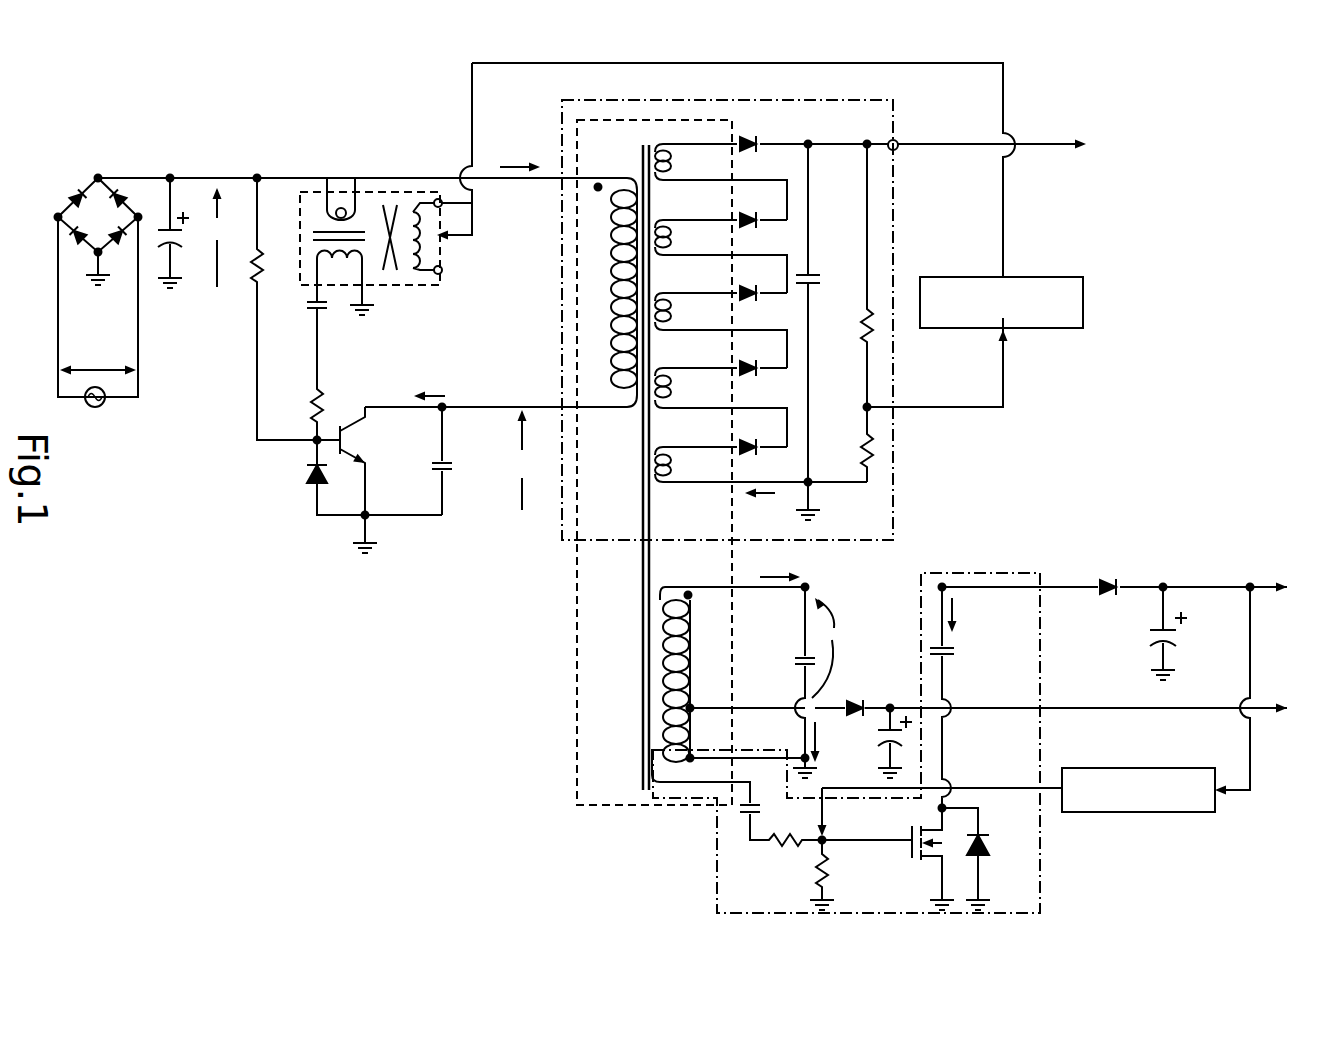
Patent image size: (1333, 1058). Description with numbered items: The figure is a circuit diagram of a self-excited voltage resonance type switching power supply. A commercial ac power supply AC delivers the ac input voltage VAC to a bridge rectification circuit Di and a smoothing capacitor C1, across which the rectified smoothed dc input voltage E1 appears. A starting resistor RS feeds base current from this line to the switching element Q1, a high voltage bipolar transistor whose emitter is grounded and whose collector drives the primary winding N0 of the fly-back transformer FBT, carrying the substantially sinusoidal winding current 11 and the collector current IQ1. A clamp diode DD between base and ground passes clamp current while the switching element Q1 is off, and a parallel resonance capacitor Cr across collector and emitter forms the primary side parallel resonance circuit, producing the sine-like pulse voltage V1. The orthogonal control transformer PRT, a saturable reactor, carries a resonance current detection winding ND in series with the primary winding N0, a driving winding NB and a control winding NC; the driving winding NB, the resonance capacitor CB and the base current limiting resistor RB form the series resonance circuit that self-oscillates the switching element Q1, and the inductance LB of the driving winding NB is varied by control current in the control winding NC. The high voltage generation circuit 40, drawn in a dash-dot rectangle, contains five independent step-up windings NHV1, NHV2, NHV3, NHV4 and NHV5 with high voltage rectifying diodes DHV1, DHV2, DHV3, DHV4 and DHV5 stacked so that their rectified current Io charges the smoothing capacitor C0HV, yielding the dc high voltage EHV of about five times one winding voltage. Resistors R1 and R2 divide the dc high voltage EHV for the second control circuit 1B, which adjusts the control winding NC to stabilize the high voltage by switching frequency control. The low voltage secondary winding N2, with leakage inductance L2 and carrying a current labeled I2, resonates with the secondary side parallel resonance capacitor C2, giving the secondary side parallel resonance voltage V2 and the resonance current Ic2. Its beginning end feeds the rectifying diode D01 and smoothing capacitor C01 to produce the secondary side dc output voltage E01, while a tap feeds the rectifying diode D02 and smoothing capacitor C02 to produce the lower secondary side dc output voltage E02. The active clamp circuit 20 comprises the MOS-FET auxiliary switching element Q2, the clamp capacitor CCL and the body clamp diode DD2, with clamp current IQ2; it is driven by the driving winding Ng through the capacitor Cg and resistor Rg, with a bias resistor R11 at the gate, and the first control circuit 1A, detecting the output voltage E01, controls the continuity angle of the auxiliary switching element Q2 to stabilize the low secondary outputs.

The rectifier diode bridge Di is at (114, 222).
The AC power source AC is at (111, 408).
The AC input voltage VAC is at (98, 371).
The smoothing capacitor C1 is at (180, 232).
The DC input voltage E1 is at (216, 237).
The starting resistor RS is at (295, 308).
The orthogonal control transformer PRT is at (370, 219).
The detection winding ND is at (340, 200).
The base winding NB is at (345, 275).
The base winding inductance LB is at (349, 361).
The control winding NC is at (427, 236).
The base capacitor CB is at (300, 340).
The base resistor RB is at (299, 414).
The switching transistor Q1 is at (359, 461).
The damper diode DD is at (355, 496).
The resonance capacitor Cr is at (452, 460).
The switching current IQ1 is at (428, 384).
The resonance voltage V1 is at (522, 460).
The primary current 11 is at (520, 157).
The high voltage generating circuit 40 is at (620, 100).
The flyback transformer FBT is at (654, 481).
The primary winding N0 is at (592, 252).
The high voltage winding 1 NHV1 is at (731, 182).
The high voltage winding 2 NHV2 is at (721, 256).
The high voltage winding 3 NHV3 is at (721, 330).
The high voltage winding 4 NHV4 is at (721, 407).
The high voltage winding 5 NHV5 is at (761, 464).
The high voltage rectifier diode 1 DHV1 is at (767, 158).
The high voltage rectifier diode 2 DHV2 is at (767, 233).
The high voltage rectifier diode 3 DHV3 is at (767, 307).
The high voltage rectifier diode 4 DHV4 is at (767, 383).
The high voltage rectifier diode 5 DHV5 is at (767, 438).
The high voltage smoothing capacitor C0HV is at (832, 331).
The voltage dividing resistor R1 is at (850, 286).
The voltage dividing resistor R2 is at (919, 400).
The output current Io is at (760, 508).
The high DC voltage output EHV is at (969, 146).
The second control circuit 1B is at (1048, 328).
The secondary winding N2 is at (724, 619).
The secondary winding inductance L2 is at (757, 648).
The gate drive winding Ng is at (690, 768).
The secondary current I2 is at (780, 568).
The secondary resonance capacitor C2 is at (792, 672).
The secondary resonance voltage V2 is at (830, 646).
The capacitor current Ic2 is at (834, 742).
The rectifier diode D02 is at (1051, 697).
The smoothing capacitor C02 is at (876, 742).
The active clamp capacitor CCL is at (958, 696).
The auxiliary switch current IQ2 is at (973, 615).
The auxiliary switching MOSFET Q2 is at (888, 858).
The damper diode DD2 is at (986, 859).
The gate capacitor Cg is at (765, 821).
The gate resistor Rg is at (795, 853).
The gate resistor R11 is at (841, 875).
The active clamp circuit 20 is at (1040, 845).
The first control circuit 1A is at (1110, 768).
The rectifier diode D01 is at (1114, 576).
The smoothing capacitor C01 is at (1189, 632).
The first DC output voltage E01 is at (1310, 588).
The second DC output voltage E02 is at (1310, 709).